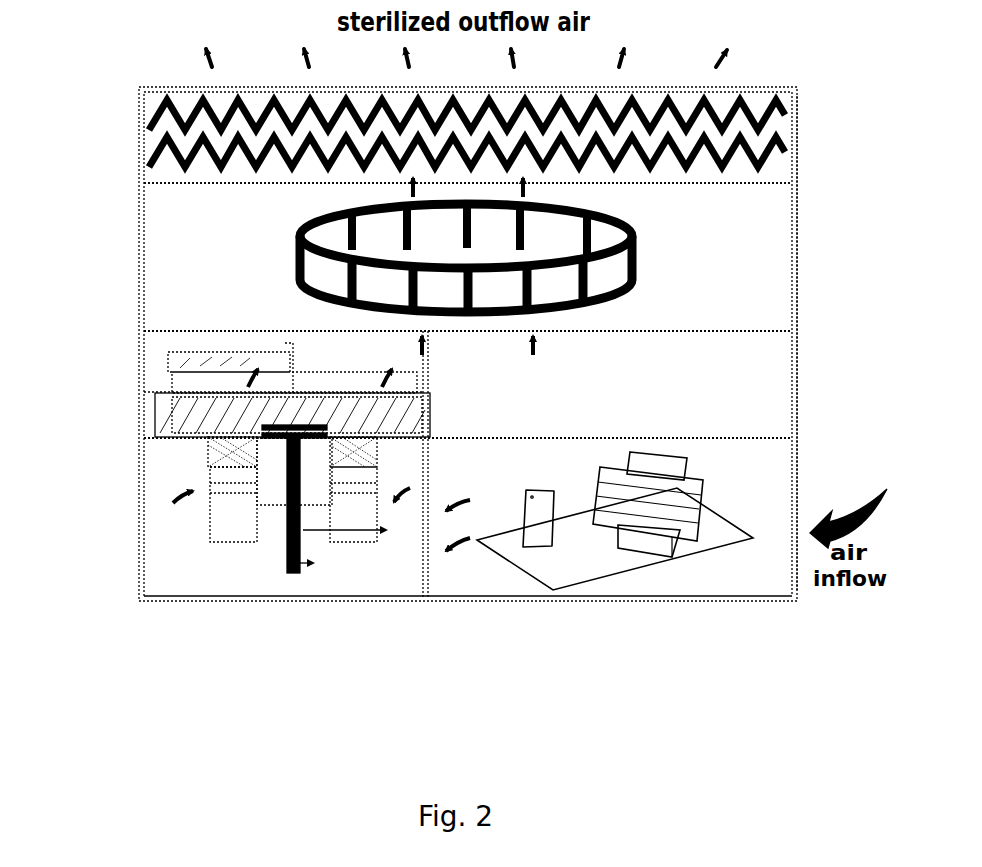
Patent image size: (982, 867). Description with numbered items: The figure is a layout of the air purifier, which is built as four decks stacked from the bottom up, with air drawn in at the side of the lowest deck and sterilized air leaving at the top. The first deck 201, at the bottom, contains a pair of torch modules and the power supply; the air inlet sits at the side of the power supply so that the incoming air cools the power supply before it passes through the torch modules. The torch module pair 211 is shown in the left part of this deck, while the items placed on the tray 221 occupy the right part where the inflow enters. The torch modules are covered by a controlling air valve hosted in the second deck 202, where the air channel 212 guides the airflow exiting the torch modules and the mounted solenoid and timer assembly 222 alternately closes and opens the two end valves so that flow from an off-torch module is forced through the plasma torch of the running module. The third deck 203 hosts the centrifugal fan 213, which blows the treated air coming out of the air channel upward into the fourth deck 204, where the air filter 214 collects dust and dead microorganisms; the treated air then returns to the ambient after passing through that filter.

The first (lower) chamber / air inlet section 201 is at (131, 502).
The second chamber / fan and filter section 202 is at (131, 372).
The third chamber / UV sterilization section 203 is at (131, 259).
The fourth chamber / outlet filter section 204 is at (131, 142).
The fan motor assembly 211 is at (255, 538).
The primary filter plate 212 is at (437, 365).
The UV lamp ring 213 is at (634, 266).
The outlet filter layer 214 is at (813, 157).
The tray holding items to be sterilized 221 is at (735, 558).
The fan housing / duct element 222 is at (232, 367).